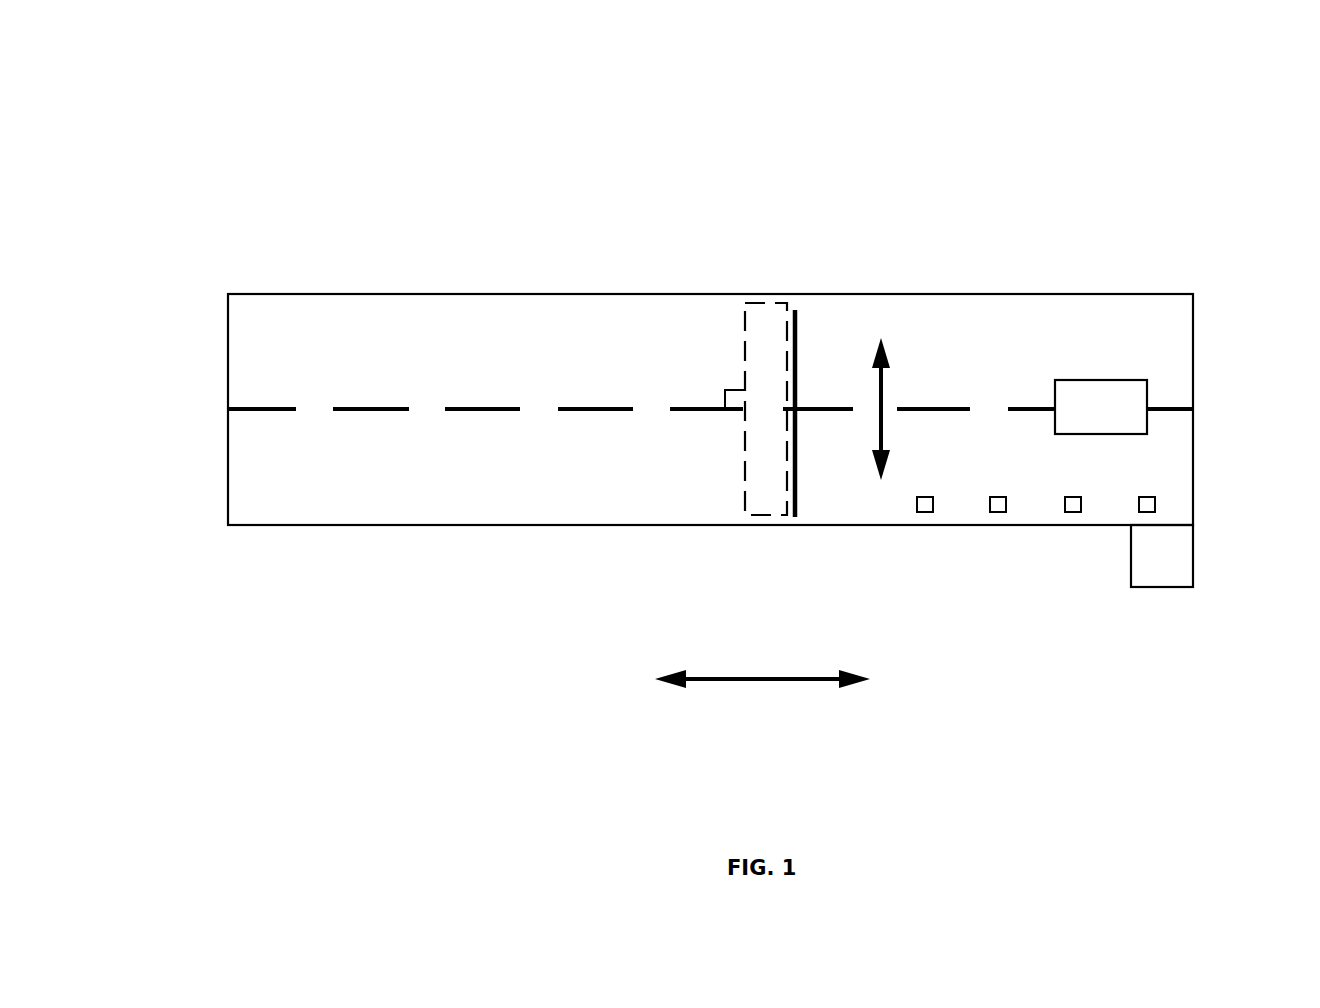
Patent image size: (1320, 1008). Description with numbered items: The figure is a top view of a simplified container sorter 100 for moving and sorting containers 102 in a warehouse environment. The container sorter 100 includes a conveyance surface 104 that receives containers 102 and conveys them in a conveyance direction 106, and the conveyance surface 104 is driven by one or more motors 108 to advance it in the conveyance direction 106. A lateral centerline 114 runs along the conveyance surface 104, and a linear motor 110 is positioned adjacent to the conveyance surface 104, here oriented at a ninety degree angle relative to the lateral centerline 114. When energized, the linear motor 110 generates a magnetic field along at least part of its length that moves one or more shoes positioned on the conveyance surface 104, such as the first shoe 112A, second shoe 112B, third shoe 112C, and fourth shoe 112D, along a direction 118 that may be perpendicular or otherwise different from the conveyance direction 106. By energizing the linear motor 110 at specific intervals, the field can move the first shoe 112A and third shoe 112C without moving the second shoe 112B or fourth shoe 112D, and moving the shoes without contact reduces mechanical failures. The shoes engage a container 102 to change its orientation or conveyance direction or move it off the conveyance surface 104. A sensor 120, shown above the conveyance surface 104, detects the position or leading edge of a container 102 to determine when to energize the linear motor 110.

The container sorter 100 is at (235, 142).
The container 102 is at (1147, 392).
The conveyance surface 104 is at (1150, 330).
The conveyance direction 106 is at (765, 681).
The motor 108 is at (1160, 587).
The linear motor 110 is at (743, 352).
The first shoe 112A is at (923, 512).
The second shoe 112B is at (996, 512).
The third shoe 112C is at (1071, 512).
The fourth shoe 112D is at (1155, 503).
The lateral centerline 114 is at (460, 409).
The direction 118 is at (880, 410).
The sensor 120 is at (795, 342).